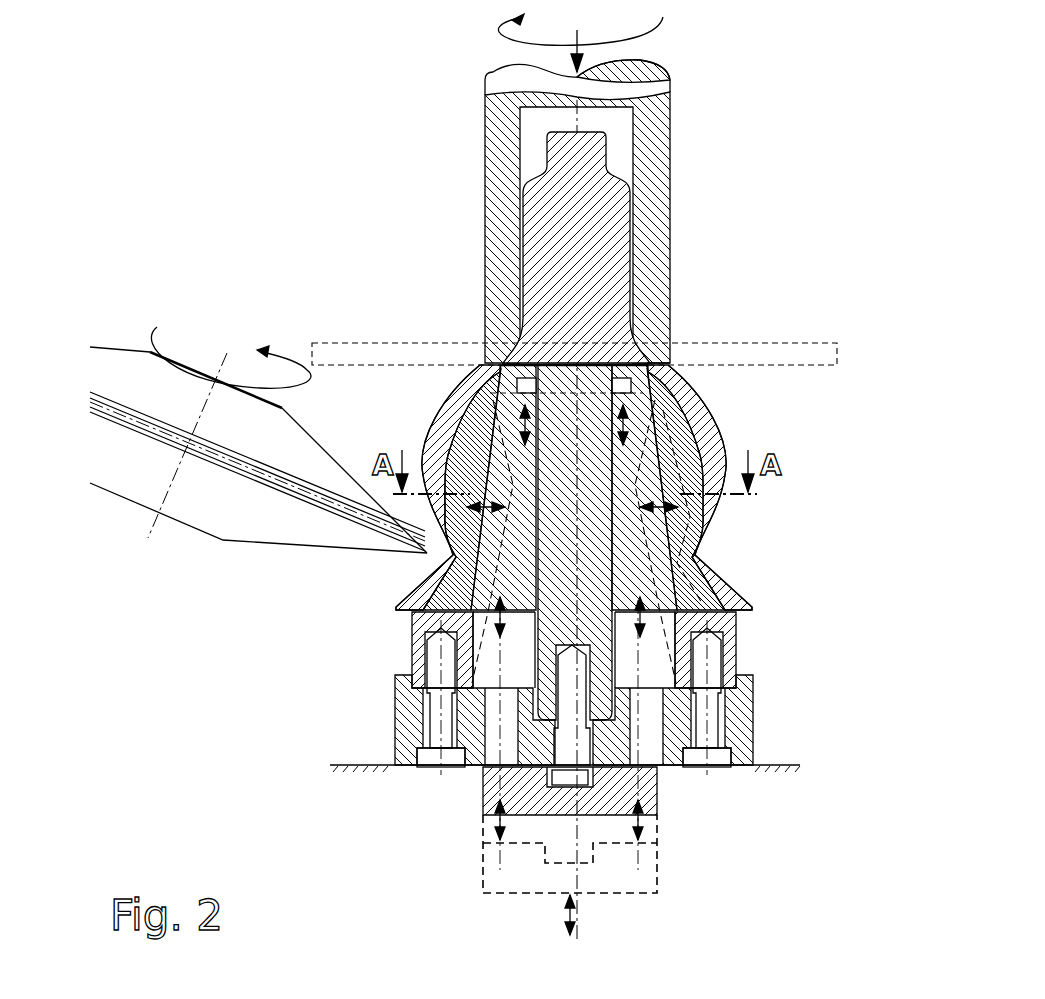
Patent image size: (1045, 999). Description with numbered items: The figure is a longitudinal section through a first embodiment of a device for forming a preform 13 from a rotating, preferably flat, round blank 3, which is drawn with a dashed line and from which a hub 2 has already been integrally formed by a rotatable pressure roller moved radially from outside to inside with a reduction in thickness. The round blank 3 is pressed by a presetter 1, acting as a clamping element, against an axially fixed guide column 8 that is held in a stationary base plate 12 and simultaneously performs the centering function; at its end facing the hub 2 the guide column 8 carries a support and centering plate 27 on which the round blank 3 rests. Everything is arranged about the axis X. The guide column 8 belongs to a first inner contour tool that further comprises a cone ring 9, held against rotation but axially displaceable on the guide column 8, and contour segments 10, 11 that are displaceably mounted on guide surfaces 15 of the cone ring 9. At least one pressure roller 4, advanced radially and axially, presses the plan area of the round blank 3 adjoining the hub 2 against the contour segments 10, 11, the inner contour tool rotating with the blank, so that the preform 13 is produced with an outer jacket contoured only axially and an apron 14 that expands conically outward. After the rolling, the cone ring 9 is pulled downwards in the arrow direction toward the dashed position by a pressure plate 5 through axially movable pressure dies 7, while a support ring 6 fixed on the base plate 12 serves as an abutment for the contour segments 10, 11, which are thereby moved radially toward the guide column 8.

The presetter 1 is at (493, 163).
The hub 2 is at (540, 241).
The round blank 3 is at (347, 355).
The pressure roller 4 is at (247, 410).
The pressure plate 5 is at (492, 782).
The support ring 6 is at (417, 635).
The pressure die 7 is at (493, 705).
The guide column 8 is at (552, 565).
The cone ring 9 is at (637, 568).
The contour segment 10 is at (665, 460).
The contour segment 11 is at (515, 402).
The base plate 12 is at (398, 733).
The preform 13 is at (712, 457).
The apron 14 is at (728, 593).
The guide surface 15 is at (637, 422).
The support and centering plate 27 is at (652, 348).
The axis X is at (580, 240).